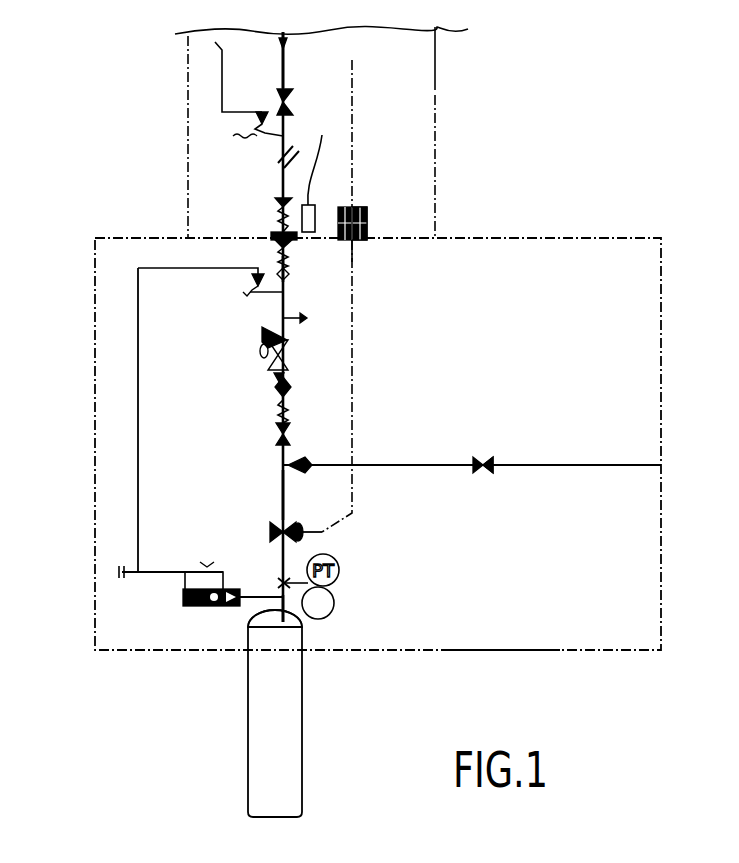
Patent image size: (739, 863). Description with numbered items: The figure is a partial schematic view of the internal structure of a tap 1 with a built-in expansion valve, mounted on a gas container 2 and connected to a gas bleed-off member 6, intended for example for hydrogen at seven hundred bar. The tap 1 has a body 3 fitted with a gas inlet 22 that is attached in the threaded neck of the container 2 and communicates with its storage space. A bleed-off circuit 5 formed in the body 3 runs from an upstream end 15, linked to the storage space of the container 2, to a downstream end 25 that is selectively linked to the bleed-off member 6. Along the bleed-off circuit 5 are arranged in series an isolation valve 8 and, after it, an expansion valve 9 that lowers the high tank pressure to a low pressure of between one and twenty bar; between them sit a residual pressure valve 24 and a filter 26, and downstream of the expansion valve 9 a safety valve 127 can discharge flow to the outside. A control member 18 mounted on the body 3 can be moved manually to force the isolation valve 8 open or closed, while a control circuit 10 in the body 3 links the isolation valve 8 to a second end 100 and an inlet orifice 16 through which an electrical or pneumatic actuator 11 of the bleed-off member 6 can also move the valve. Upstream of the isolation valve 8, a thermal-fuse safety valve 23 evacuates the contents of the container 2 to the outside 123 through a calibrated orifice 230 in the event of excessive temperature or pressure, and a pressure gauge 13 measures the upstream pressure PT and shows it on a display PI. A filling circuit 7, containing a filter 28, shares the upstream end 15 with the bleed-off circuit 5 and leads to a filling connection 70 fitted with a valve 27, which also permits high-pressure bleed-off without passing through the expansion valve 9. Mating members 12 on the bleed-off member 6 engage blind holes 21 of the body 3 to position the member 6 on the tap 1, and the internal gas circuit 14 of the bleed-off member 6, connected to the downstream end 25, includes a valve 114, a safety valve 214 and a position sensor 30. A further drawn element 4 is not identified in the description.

The tap 1 is at (663, 653).
The container 2 is at (287, 770).
The body 3 is at (508, 636).
The tank connection 4 is at (316, 649).
The bleed-off circuit 5 is at (275, 496).
The gas bleed-off member 6 is at (435, 86).
The filling circuit 7 is at (472, 429).
The isolation valve 8 is at (184, 556).
The expansion valve 9 is at (179, 360).
The control circuit 10 is at (357, 330).
The actuator 11 is at (408, 181).
The mating members 12 is at (207, 202).
The pressure gauge 13 is at (359, 637).
The internal gas circuit 14 is at (359, 45).
The upstream end 15 is at (235, 654).
The inlet orifice 16 is at (423, 200).
The control member 18 is at (382, 624).
The blind holes 21 is at (268, 258).
The gas inlet 22 is at (275, 618).
The safety valve 23 is at (169, 625).
The residual pressure valve 24 is at (174, 439).
The downstream end 25 is at (409, 248).
The filter 26 is at (174, 407).
The valve 27 is at (598, 494).
The filter 28 is at (310, 424).
The position sensor 30 is at (398, 159).
The filling connection 70 is at (593, 455).
The second end 100 is at (427, 229).
The valve 114 is at (397, 76).
The outside 123 is at (73, 612).
The safety valve 127 is at (169, 296).
The safety valve 214 is at (197, 90).
The calibrated orifice 230 is at (183, 607).